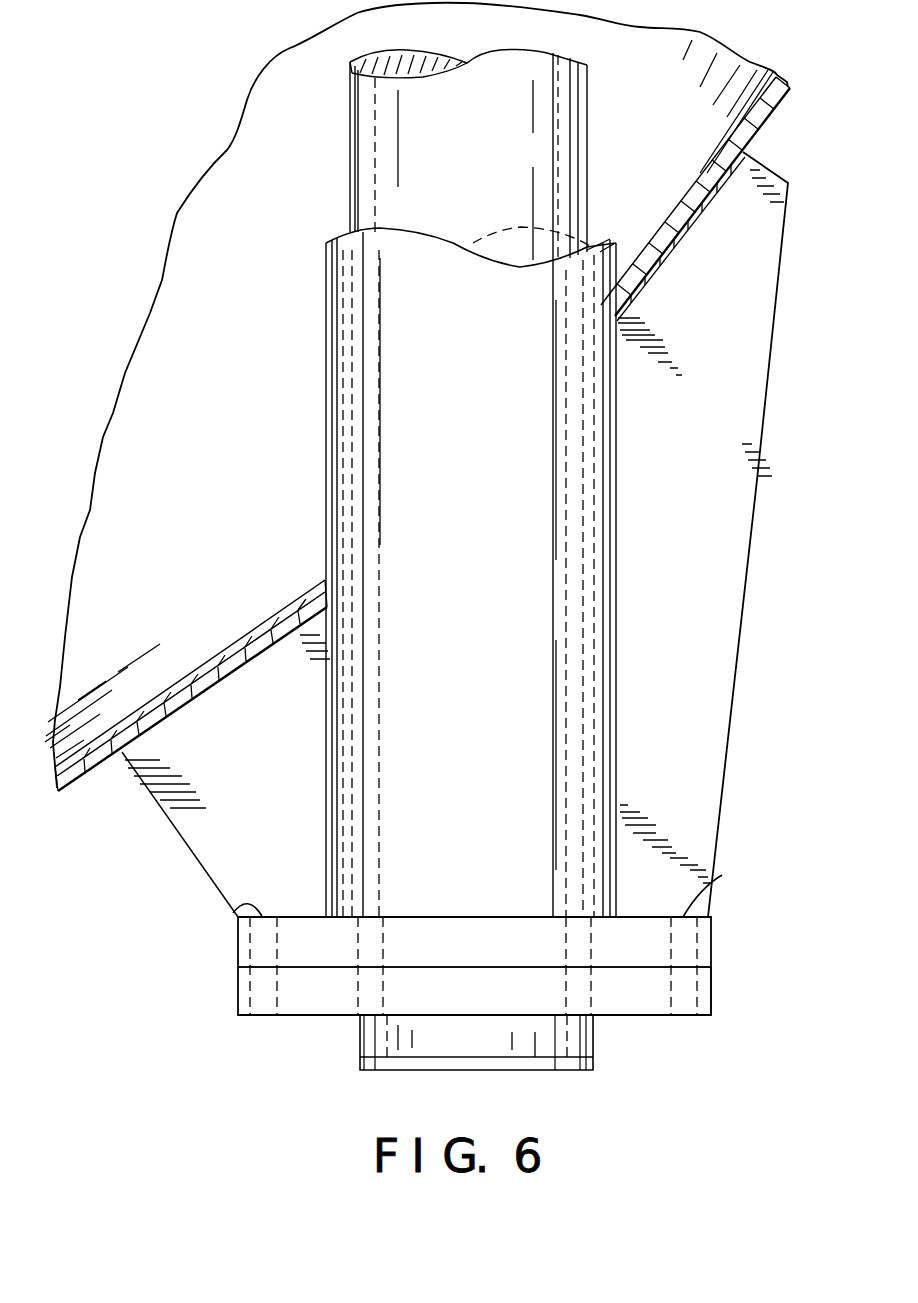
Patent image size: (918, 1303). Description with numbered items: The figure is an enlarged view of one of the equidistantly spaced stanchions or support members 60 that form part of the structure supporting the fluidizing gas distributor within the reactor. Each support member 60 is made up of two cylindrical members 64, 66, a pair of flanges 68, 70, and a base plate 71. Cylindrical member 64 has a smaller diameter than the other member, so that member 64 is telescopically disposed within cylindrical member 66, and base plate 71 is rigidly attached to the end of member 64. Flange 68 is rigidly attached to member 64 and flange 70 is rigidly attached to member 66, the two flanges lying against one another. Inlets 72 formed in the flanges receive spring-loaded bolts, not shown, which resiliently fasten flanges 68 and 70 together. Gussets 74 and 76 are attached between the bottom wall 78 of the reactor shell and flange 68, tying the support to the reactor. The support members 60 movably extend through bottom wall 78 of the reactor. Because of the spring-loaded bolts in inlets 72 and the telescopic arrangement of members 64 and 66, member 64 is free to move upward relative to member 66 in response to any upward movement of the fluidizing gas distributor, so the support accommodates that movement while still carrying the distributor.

The support member 60 is at (300, 437).
The cylindrical member 64 is at (582, 120).
The cylindrical member 66 is at (612, 426).
The flange 68 is at (713, 938).
The flange 70 is at (713, 986).
The base plate 71 is at (547, 1068).
The inlet 72 is at (232, 912).
The gusset 74 is at (150, 790).
The gusset 76 is at (735, 527).
The bottom wall 78 is at (235, 650).